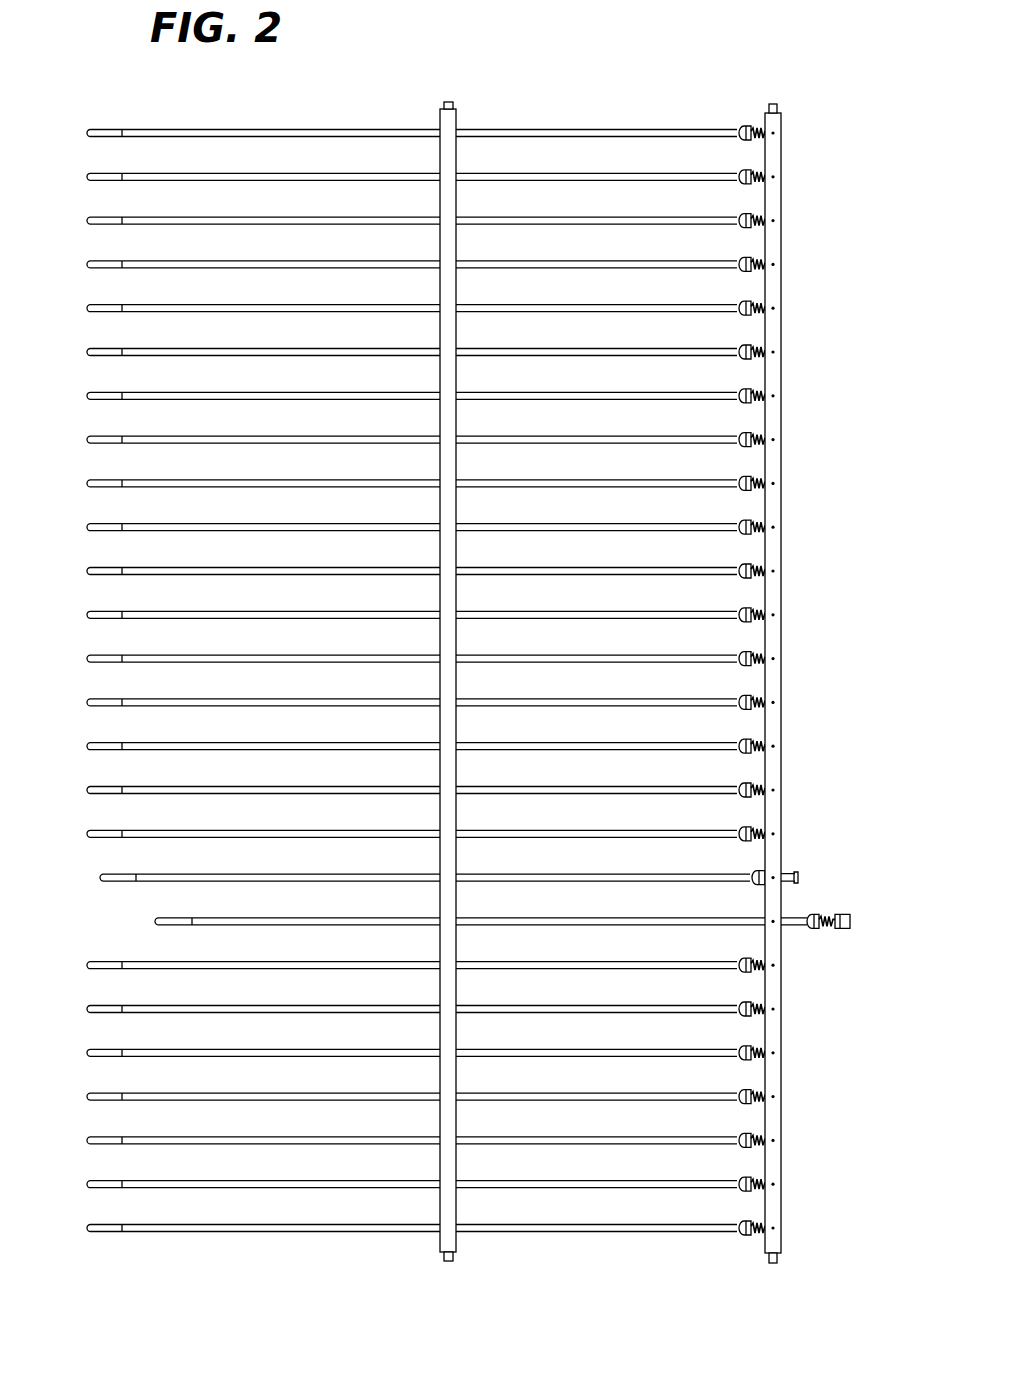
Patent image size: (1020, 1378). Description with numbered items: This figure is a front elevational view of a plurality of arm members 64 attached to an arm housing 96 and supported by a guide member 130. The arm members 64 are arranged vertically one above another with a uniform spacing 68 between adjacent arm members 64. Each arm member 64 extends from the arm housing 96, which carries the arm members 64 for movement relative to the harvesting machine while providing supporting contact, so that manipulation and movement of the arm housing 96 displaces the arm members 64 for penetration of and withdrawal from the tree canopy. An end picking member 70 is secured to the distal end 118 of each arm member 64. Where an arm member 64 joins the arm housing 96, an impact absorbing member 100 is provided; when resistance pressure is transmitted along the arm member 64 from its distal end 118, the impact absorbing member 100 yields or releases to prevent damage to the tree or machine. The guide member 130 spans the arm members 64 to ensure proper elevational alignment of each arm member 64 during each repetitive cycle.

The guide member 130 is at (440, 121).
The arm housing 96 is at (781, 287).
The impact absorbing member 100 is at (748, 695).
The end picking member 70 is at (103, 740).
The arm member 64 is at (138, 829).
The uniform spacing 68 is at (150, 855).
The distal end 118 is at (88, 1232).